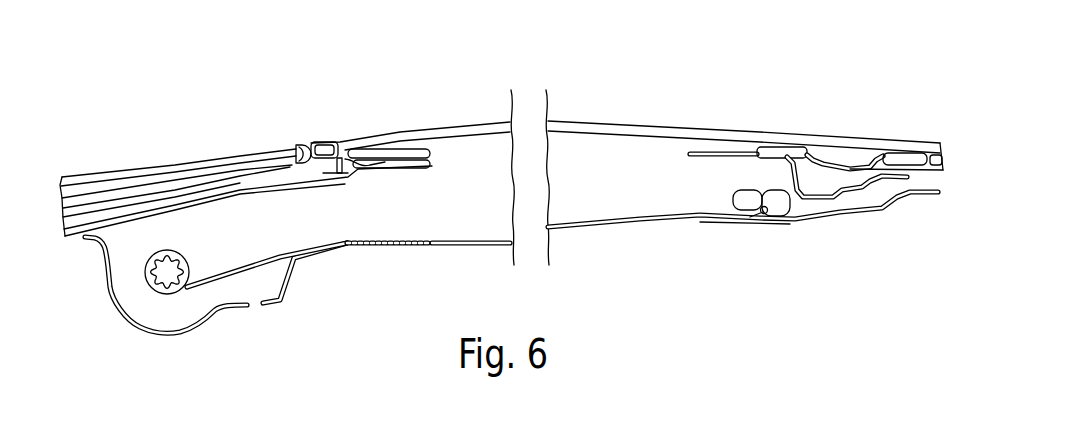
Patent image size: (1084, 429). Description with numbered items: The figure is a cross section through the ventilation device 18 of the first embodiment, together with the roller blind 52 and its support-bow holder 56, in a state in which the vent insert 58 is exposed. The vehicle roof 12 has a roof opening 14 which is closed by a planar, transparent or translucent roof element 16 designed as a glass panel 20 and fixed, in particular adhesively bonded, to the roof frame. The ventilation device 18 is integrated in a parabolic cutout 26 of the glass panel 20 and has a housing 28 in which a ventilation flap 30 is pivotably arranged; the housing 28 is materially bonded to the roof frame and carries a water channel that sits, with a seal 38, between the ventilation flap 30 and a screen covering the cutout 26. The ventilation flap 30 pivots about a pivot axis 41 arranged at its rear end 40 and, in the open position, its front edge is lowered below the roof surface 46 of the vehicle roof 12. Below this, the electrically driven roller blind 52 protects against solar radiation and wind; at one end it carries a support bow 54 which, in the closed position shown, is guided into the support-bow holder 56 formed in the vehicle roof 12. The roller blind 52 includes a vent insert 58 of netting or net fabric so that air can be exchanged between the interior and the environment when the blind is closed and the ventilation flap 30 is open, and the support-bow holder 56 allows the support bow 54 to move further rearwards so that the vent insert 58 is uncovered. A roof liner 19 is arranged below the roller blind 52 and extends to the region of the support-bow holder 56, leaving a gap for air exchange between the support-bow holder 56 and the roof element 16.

The vehicle roof 12 is at (787, 105).
The roof opening 14 is at (588, 118).
The roof element 16 is at (482, 125).
The ventilation device 18 is at (133, 148).
The roof liner 19 is at (322, 257).
The glass panel 20 is at (868, 142).
The cutout 26 is at (242, 140).
The housing 28 is at (108, 218).
The ventilation flap 30 is at (178, 165).
The seal 38 is at (306, 146).
The rear end 40 is at (298, 140).
The pivot axis 41 is at (309, 173).
The roof surface 46 is at (433, 128).
The roller blind 52 is at (627, 228).
The support bow 54 is at (767, 214).
The support-bow holder 56 is at (725, 187).
The vent insert 58 is at (398, 236).